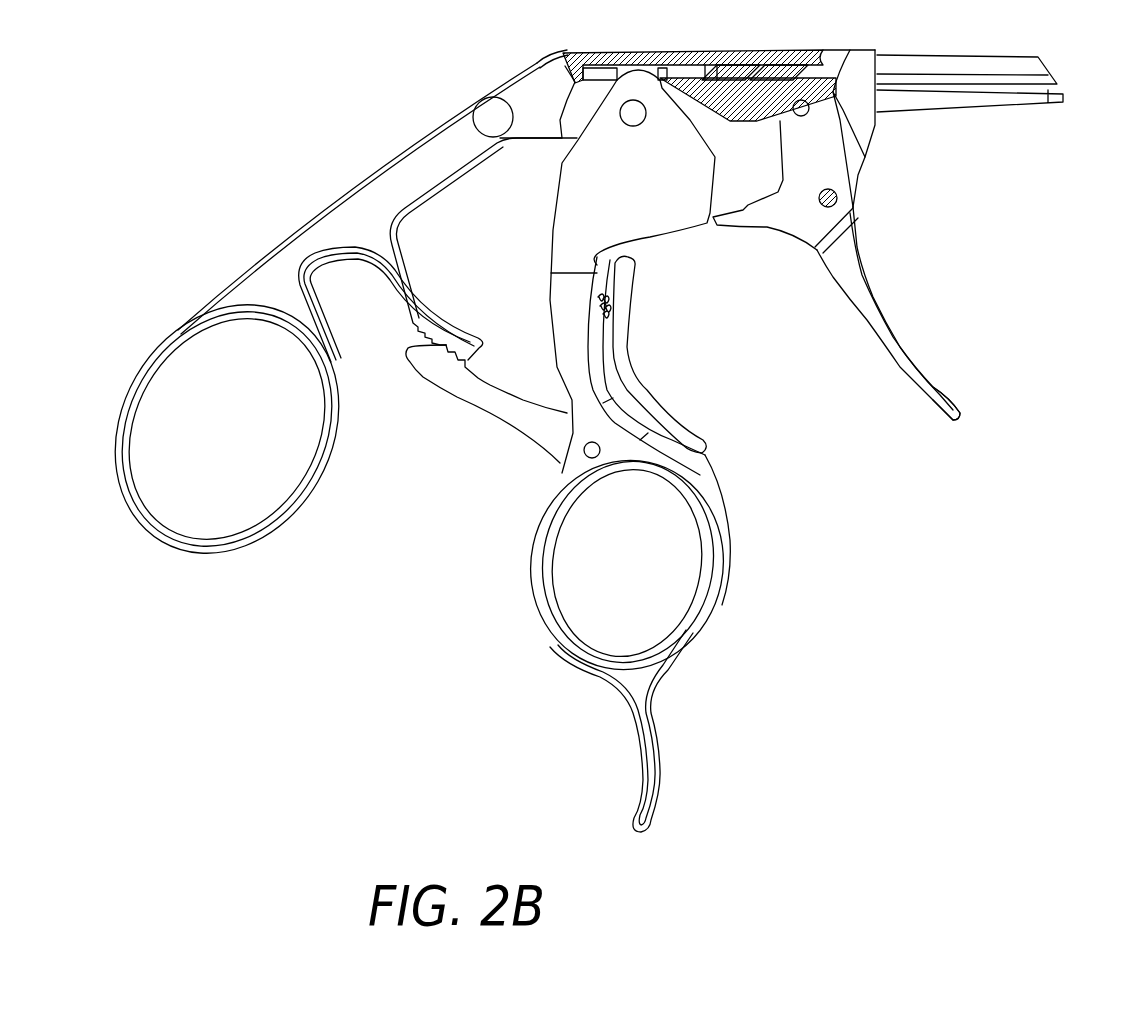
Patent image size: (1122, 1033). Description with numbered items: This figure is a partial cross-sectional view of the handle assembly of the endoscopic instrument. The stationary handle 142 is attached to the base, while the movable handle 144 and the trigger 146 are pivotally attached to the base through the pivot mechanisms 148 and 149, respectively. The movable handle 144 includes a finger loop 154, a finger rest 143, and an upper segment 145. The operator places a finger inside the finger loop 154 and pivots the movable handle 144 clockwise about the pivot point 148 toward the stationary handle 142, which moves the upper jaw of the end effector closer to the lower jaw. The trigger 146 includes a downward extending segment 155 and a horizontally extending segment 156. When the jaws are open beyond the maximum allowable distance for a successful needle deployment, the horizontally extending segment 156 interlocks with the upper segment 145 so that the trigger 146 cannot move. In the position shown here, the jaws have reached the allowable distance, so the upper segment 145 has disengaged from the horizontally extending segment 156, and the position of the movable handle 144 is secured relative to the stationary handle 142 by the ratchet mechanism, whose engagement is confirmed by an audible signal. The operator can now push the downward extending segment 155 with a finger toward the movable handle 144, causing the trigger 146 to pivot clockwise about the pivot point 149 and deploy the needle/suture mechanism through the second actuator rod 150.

The stationary handle 142 is at (287, 498).
The finger rest 143 is at (613, 368).
The movable handle 144 is at (547, 623).
The upper segment 145 is at (651, 194).
The trigger 146 is at (873, 330).
The pivot mechanism 148 is at (622, 122).
The pivot mechanism 149 is at (838, 195).
The second actuator rod 150 is at (997, 97).
The finger loop 154 is at (649, 571).
The downward extending segment 155 is at (918, 393).
The horizontally extending segment 156 is at (735, 217).